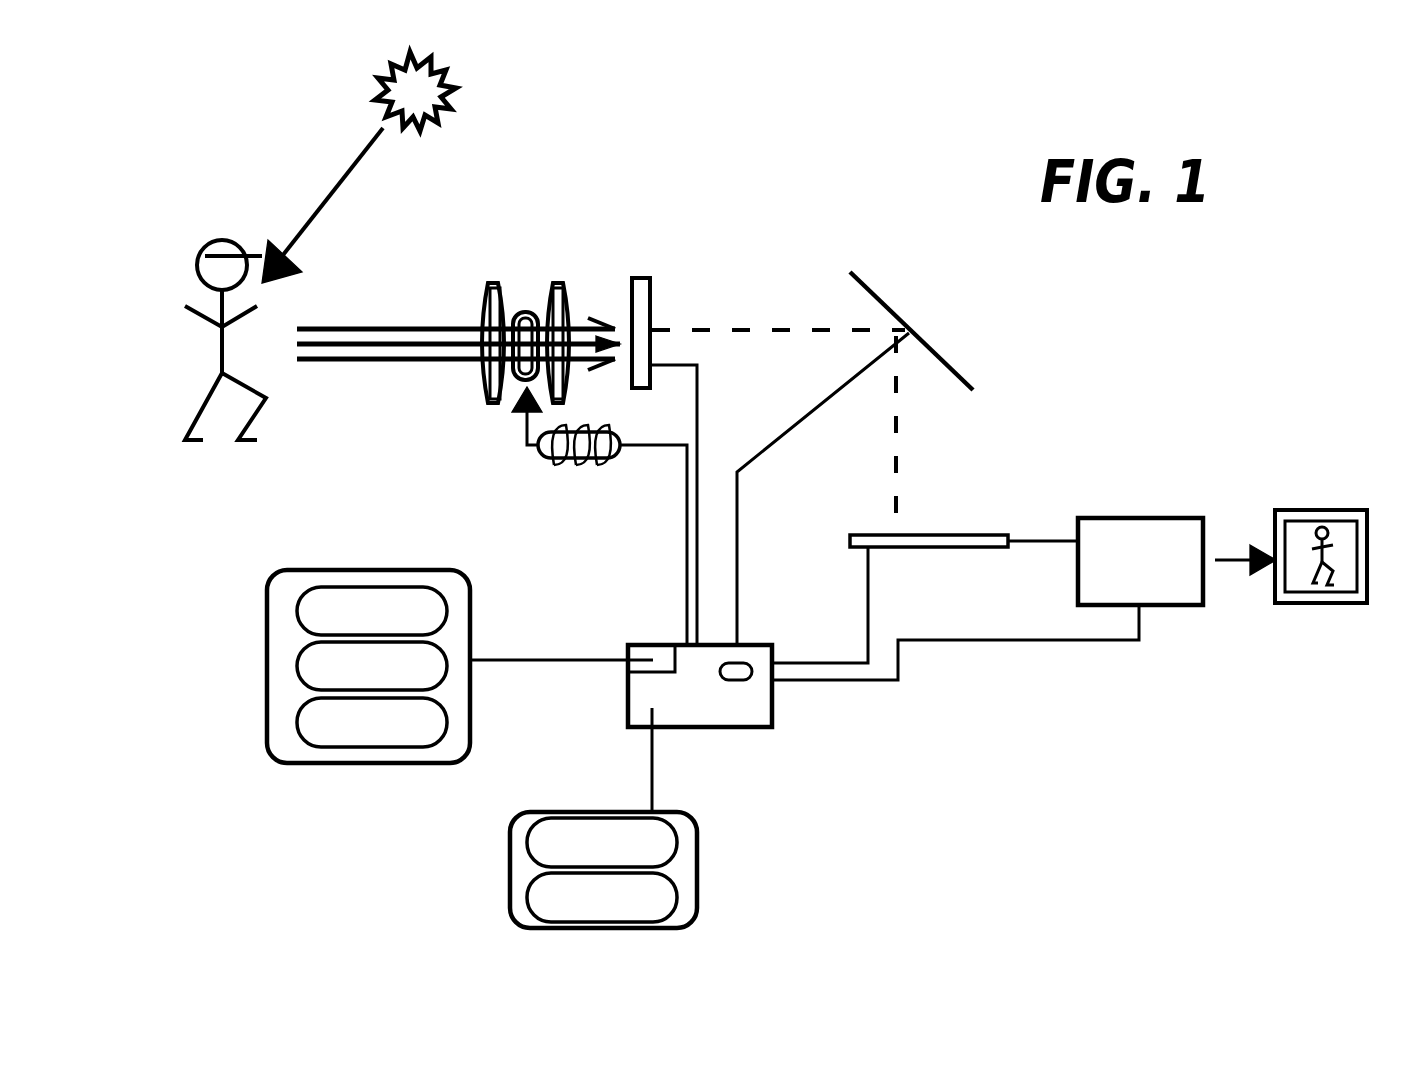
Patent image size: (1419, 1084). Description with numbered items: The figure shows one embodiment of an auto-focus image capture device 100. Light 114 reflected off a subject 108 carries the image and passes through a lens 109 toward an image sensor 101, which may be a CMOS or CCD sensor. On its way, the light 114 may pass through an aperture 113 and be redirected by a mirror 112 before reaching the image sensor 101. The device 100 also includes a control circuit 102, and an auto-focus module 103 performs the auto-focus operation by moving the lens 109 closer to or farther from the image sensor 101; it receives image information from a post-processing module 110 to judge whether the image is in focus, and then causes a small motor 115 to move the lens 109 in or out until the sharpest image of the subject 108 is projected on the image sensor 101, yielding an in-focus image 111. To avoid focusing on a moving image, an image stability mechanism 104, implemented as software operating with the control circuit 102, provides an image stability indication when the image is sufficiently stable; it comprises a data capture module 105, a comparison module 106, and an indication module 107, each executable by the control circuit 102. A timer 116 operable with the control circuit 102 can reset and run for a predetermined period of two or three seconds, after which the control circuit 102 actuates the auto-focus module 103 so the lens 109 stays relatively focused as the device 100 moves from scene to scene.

The auto-focus image capture device 100 is at (1188, 423).
The image sensor 101 is at (948, 548).
The control circuit 102 is at (775, 698).
The auto-focus module 103 is at (527, 843).
The image stability mechanism 104 is at (665, 660).
The data capture module 105 is at (297, 608).
The comparison module 106 is at (297, 663).
The indication module 107 is at (297, 720).
The subject 108 is at (266, 402).
The lens 109 is at (527, 312).
The post-processing module 110 is at (1140, 518).
The in-focus image 111 is at (1297, 580).
The mirror 112 is at (870, 287).
The aperture 113 is at (640, 277).
The light 114 is at (415, 333).
The motor 115 is at (593, 450).
The timer 116 is at (727, 680).